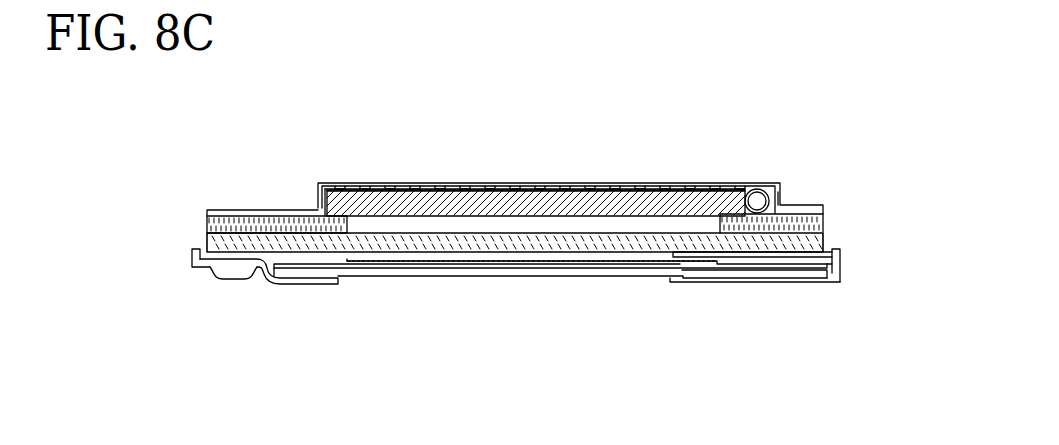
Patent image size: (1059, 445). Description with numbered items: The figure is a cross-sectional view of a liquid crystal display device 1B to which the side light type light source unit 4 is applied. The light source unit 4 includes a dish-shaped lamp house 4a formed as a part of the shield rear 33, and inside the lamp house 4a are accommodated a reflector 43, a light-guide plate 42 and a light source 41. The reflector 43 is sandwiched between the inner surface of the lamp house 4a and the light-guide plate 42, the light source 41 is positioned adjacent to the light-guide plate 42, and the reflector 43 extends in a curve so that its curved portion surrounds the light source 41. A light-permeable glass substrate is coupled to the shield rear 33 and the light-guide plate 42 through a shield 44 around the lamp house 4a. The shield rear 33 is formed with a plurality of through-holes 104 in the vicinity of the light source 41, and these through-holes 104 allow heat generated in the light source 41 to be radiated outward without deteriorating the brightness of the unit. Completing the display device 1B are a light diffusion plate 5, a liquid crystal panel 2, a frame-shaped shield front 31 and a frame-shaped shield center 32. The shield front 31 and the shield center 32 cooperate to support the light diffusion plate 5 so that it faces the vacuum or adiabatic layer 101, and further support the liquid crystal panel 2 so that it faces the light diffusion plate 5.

The liquid crystal display device 1B is at (783, 165).
The liquid crystal panel 2 is at (430, 268).
The light source unit 4 is at (600, 195).
The lamp house 4a is at (540, 185).
The light diffusion plate 5 is at (648, 240).
The shield front 31 is at (715, 279).
The shield center 32 is at (820, 256).
The shield rear 33 is at (322, 205).
The light source 41 is at (778, 195).
The light-guide plate 42 is at (450, 202).
The reflector 43 is at (770, 180).
The shield 44 is at (245, 210).
The vacuum or adiabatic layer 101 is at (405, 230).
The through-holes 104 is at (357, 182).